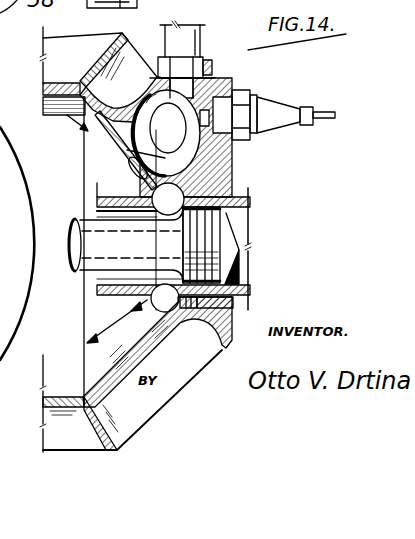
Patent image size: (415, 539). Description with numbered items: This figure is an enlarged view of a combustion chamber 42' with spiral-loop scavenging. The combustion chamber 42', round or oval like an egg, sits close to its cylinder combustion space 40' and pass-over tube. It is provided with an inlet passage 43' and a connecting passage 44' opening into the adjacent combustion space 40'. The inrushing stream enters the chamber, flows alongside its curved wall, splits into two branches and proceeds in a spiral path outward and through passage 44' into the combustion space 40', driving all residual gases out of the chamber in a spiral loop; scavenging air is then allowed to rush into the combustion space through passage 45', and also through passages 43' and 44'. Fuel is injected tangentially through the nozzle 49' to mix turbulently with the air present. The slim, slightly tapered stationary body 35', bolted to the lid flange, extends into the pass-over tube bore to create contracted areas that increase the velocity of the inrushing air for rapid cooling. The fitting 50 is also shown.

The stationary body 35' is at (242, 237).
The combustion space 40' is at (133, 373).
The combustion chamber 42' is at (216, 137).
The inlet passage 43' is at (99, 150).
The connecting passage 44' is at (102, 140).
The scavenging air passage 45' is at (90, 321).
The fuel nozzle 49' is at (226, 59).
The side fitting 50 is at (282, 128).